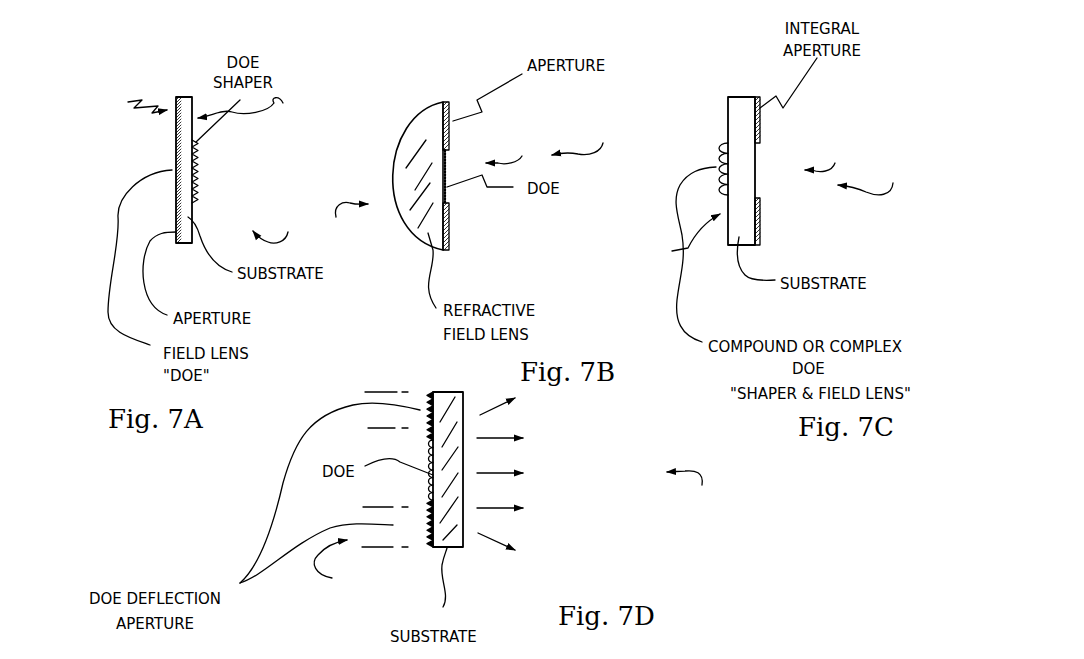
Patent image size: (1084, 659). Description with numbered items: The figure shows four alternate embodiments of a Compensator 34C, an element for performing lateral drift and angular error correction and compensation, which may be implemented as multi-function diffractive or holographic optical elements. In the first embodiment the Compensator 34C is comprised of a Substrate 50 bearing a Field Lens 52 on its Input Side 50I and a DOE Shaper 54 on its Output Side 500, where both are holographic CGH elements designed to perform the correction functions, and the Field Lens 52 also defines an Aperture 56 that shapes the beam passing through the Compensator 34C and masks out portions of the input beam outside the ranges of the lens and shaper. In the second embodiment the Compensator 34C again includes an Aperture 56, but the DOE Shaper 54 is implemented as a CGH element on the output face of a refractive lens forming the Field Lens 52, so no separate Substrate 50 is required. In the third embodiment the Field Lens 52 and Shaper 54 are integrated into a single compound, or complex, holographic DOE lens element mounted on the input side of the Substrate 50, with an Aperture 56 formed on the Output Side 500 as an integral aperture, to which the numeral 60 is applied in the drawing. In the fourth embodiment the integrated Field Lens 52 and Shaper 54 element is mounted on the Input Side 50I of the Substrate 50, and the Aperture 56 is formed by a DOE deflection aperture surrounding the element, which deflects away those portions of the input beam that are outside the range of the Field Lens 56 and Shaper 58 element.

In FIG. 7A, the substrate 50 is at (194, 68).
In FIG. 7B, the substrate 50 is at (390, 186).
In FIG. 7C, the substrate 50 is at (757, 70).
In FIG. 7D, the substrate 50 is at (463, 367).
In FIG. 7A, the input side 50I is at (125, 106).
In FIG. 7B, the input side 50I is at (353, 222).
In FIG. 7C, the input side 50I is at (673, 234).
In FIG. 7D, the input side 50I is at (344, 572).
In FIG. 7A, the output side 500 is at (257, 107).
In FIG. 7B, the output side 500 is at (507, 148).
In FIG. 7C, the output side 500 is at (823, 154).
In FIG. 7D, the output side 500 is at (563, 494).
In FIG. 7A, the field lens 52 is at (170, 159).
In FIG. 7B, the field lens 52 is at (418, 176).
In FIG. 7D, the field lens 52 is at (413, 477).
In FIG. 7A, the DOE shaper 54 is at (202, 173).
In FIG. 7B, the DOE shaper 54 is at (452, 193).
In FIG. 7D, the DOE shaper 54 is at (431, 470).
In FIG. 7A, the aperture 56 is at (177, 196).
In FIG. 7B, the aperture 56 is at (462, 124).
In FIG. 7C, the aperture 56 is at (710, 162).
In FIG. 7D, the aperture 56 is at (428, 425).
In FIG. 7C, the shaper 58 is at (723, 169).
In FIG. 7C, the integral aperture 60 is at (740, 125).
In FIG. 7A, the compensator 34C is at (276, 226).
In FIG. 7B, the compensator 34C is at (577, 139).
In FIG. 7C, the compensator 34C is at (870, 178).
In FIG. 7D, the compensator 34C is at (688, 492).